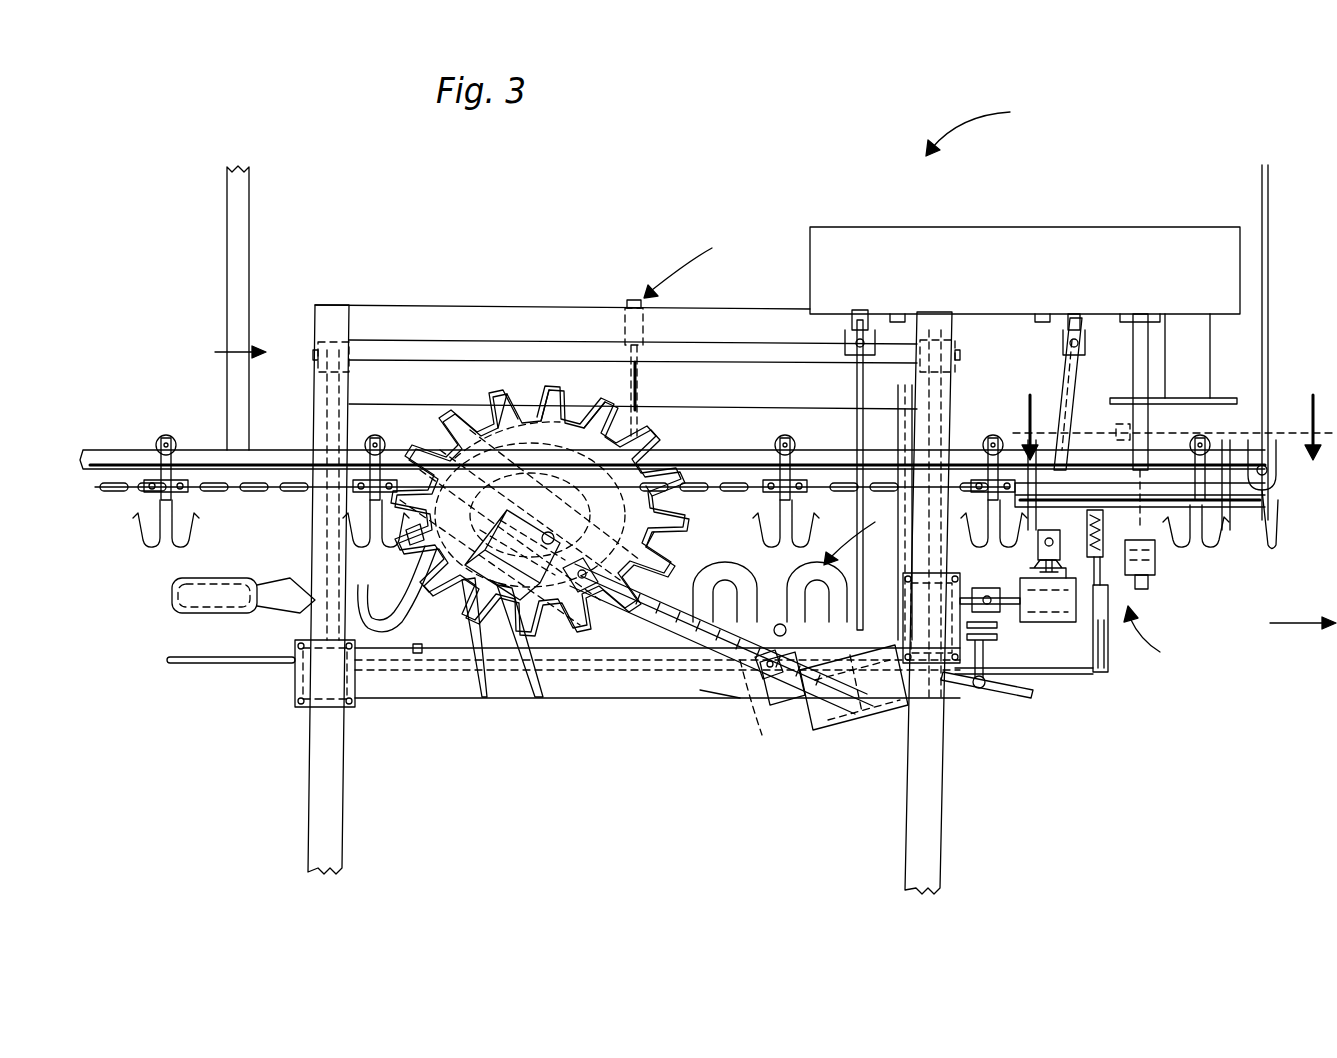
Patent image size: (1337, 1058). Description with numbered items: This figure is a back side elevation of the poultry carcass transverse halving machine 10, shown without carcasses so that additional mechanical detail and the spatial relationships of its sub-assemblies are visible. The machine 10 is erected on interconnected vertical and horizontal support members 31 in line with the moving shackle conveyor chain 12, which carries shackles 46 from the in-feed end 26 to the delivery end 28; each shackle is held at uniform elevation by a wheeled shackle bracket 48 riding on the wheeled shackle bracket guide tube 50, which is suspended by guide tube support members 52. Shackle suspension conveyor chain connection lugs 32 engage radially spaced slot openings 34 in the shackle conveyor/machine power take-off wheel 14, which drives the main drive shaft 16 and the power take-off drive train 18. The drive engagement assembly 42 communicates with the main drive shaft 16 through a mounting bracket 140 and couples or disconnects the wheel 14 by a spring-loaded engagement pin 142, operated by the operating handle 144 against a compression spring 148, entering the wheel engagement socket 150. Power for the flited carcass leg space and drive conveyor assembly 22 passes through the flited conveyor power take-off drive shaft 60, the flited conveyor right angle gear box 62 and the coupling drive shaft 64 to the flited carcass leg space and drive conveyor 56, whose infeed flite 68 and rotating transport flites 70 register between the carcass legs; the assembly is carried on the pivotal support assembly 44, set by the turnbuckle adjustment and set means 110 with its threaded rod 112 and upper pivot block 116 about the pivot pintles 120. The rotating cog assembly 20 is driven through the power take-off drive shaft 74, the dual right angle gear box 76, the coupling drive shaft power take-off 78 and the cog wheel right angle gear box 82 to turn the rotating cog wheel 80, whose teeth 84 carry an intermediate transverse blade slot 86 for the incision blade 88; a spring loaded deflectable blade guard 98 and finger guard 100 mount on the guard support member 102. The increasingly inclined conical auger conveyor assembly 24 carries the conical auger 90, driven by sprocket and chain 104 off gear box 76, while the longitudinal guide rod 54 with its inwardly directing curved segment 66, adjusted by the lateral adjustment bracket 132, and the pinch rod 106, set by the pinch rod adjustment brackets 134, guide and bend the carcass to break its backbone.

The poultry carcass transverse halving machine 10 is at (980, 122).
The moving shackle conveyor chain 12 is at (272, 492).
The shackle conveyor/machine power take-off wheel 14 is at (1205, 535).
The main drive shaft 16 is at (1152, 428).
The shackle conveyor/machine power take-off drive train 18 is at (1078, 228).
The rotating cog assembly 20 is at (523, 437).
The flited carcass leg space and drive conveyor assembly 22 is at (862, 533).
The increasingly inclined conical auger conveyor assembly 24 is at (718, 690).
The in-feed end 26 is at (194, 352).
The delivery end 28 is at (1287, 624).
The vertical and horizontal support members 31 is at (672, 402).
The shackle suspension conveyor chain connection lug 32 is at (150, 448).
The radially spaced slot openings 34 is at (1030, 440).
The shackle conveyor/machine power take-off drive engagement assembly 42 is at (1154, 638).
The flited carcass leg space and drive conveyor support assembly 44 is at (900, 398).
The shackles 46 is at (145, 545).
The wheeled shackle bracket 48 is at (165, 440).
The wheeled shackle bracket guide tube 50 is at (280, 450).
The guide tube support members 52 is at (249, 240).
The longitudinal guide rod 54 is at (290, 665).
The flited carcass leg space and drive conveyor 56 is at (738, 575).
The flited conveyor power take-off drive shaft 60 is at (1066, 450).
The flited conveyor right angle gear box 62 is at (1045, 604).
The flited conveyor coupling drive shaft 64 is at (960, 595).
The inwardly directing curved segment 66 is at (205, 662).
The infeed flite 68 is at (298, 580).
The rotating transport flites 70 is at (405, 622).
The rotating cog assembly power take-off drive shaft 74 is at (864, 428).
The dual right angle gear box 76 is at (805, 700).
The rotating cog assembly coupling drive shaft power take-off 78 is at (680, 690).
The rotating cog wheel 80 is at (548, 392).
The rotating cog wheel right angle gear box 82 is at (478, 700).
The teeth 84 is at (508, 392).
The intermediate transverse blade slot 86 is at (562, 408).
The incision blade 88 is at (410, 536).
The conical auger 90 is at (760, 738).
The spring loaded deflectable blade guard 98 is at (602, 540).
The finger guard 100 is at (486, 432).
The rotating cog assembly guard support member 102 is at (516, 478).
The sprocket and chain 104 is at (864, 722).
The pinch rod 106 is at (1012, 694).
The support assembly turnbuckle adjustment and set means 110 is at (676, 267).
The threaded rod 112 is at (640, 386).
The upper pivot block 116 is at (654, 320).
The support assembly pivot pintles 120 is at (313, 355).
The longitudinal guide rod lateral adjustment bracket 132 is at (415, 655).
The pinch rod adjustment brackets 134 is at (788, 630).
The mounting bracket 140 is at (1155, 568).
The spring-loaded drive train engagement pin 142 is at (1100, 566).
The operating handle 144 is at (1100, 625).
The compression spring 148 is at (1080, 545).
The wheel engagement socket 150 is at (1120, 460).